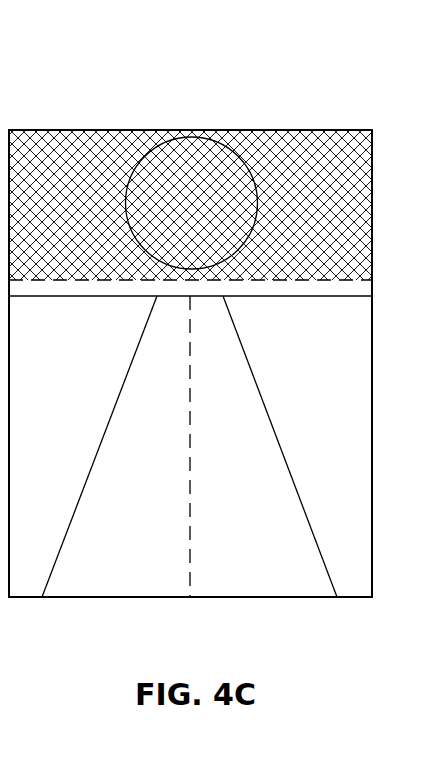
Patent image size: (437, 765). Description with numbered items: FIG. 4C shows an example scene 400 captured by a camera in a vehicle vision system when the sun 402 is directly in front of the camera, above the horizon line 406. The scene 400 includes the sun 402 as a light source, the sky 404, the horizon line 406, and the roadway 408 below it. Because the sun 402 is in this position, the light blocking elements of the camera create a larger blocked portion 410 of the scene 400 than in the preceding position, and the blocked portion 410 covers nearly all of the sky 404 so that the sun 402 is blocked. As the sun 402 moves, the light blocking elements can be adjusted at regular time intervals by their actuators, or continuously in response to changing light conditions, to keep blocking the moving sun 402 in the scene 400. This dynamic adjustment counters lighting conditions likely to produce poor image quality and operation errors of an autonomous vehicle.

The scene 400 is at (38, 130).
The sun 402 is at (205, 137).
The sky 404 is at (372, 275).
The horizon line 406 is at (60, 297).
The roadway 408 is at (253, 463).
The blocked portion 410 is at (106, 165).